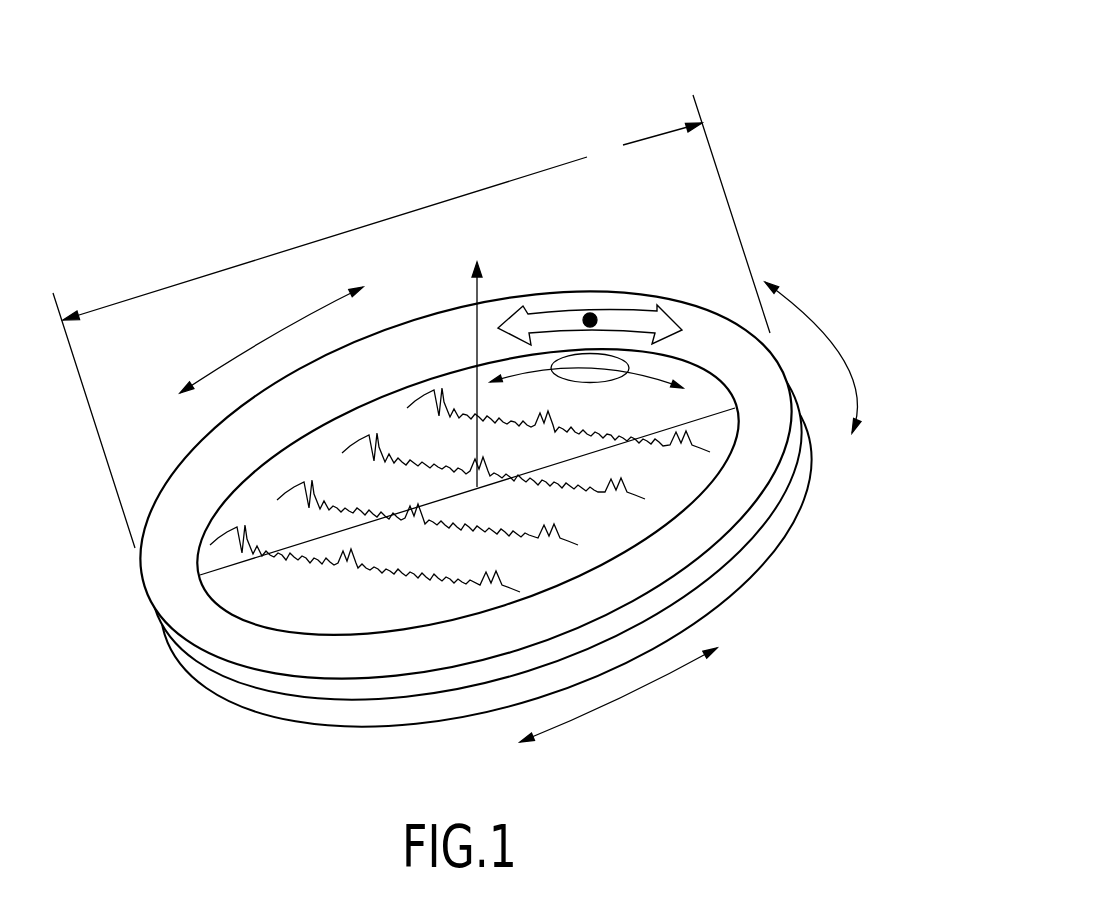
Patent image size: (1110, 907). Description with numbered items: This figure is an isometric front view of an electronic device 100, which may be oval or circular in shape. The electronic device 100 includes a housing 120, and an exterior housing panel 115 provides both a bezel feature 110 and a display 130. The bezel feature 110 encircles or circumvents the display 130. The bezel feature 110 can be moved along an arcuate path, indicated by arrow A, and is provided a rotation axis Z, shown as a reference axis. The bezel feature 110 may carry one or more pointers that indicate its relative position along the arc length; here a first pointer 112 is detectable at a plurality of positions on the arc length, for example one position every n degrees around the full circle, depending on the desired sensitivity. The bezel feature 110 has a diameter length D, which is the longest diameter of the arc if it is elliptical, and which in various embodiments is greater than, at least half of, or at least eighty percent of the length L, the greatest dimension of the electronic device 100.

The electronic device 100 is at (457, 414).
The bezel feature 110 is at (233, 633).
The first pointer 112 is at (593, 313).
The exterior housing panel 115 is at (332, 713).
The housing 120 is at (237, 738).
The display 130 is at (355, 615).